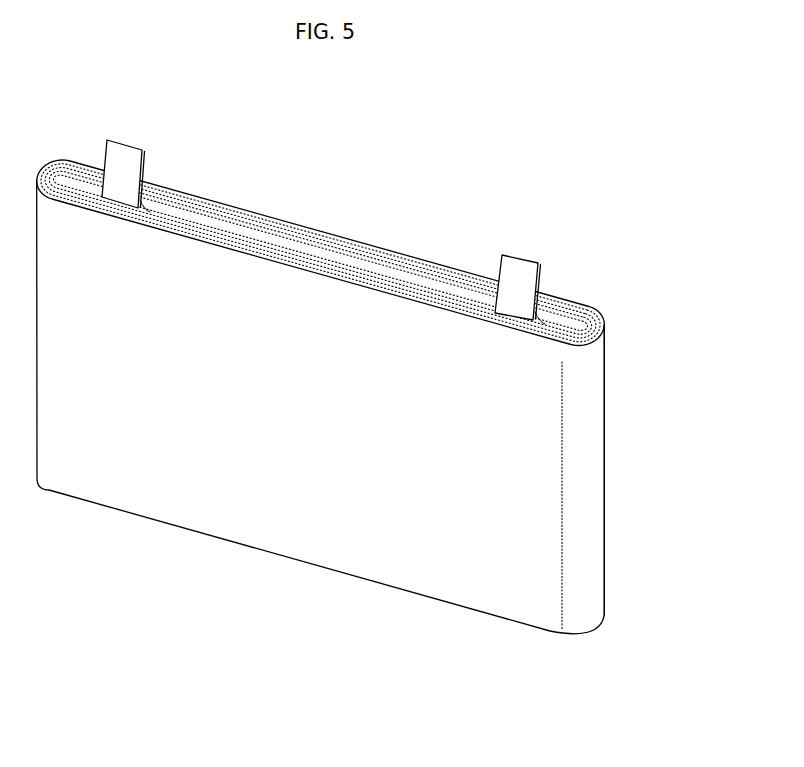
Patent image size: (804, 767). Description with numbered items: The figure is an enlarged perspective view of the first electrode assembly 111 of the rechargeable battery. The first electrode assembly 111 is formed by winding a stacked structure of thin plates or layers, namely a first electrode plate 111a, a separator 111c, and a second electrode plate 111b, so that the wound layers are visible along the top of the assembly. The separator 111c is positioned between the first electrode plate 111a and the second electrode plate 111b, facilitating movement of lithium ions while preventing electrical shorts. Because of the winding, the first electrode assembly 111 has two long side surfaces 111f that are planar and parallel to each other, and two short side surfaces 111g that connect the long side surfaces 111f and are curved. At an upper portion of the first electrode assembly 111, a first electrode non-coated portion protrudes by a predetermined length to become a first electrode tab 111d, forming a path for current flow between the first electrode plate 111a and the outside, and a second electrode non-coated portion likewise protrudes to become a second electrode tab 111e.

The first electrode assembly 111 is at (372, 359).
The first electrode plate 111a is at (187, 190).
The second electrode plate 111b is at (308, 222).
The separator 111c is at (245, 208).
The first electrode tab 111d is at (518, 270).
The second electrode tab 111e is at (122, 160).
The long side surfaces 111f is at (293, 532).
The short side surfaces 111g is at (590, 478).